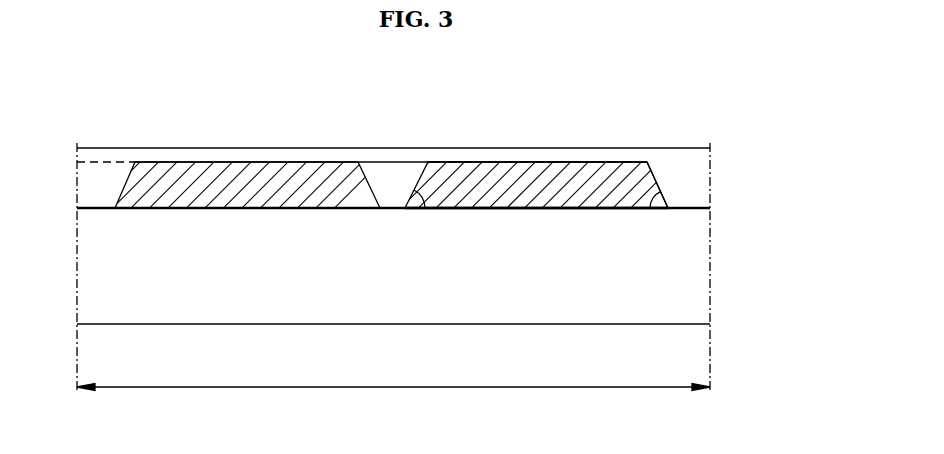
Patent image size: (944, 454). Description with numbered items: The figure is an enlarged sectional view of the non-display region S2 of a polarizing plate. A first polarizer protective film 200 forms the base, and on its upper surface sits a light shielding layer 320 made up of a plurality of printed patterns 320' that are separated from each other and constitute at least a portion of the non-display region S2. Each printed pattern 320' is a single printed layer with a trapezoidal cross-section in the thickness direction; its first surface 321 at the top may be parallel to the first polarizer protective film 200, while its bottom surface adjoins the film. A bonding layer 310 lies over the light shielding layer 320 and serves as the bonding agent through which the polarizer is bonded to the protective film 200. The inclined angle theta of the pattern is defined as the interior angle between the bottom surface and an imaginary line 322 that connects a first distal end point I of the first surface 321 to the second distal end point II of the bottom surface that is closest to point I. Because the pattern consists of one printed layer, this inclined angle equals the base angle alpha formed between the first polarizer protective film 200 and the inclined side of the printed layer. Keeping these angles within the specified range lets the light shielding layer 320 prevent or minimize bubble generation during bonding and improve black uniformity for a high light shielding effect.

The first polarizer protective film 200 is at (688, 278).
The bonding layer 310 is at (698, 188).
The light shielding layer 320 is at (354, 182).
The first surface 321 is at (541, 162).
The imaginary line 322 is at (660, 180).
The printed pattern 320' is at (536, 246).
The first distal end point I is at (651, 160).
The second distal end point II is at (672, 209).
The non-display region S2 is at (393, 281).